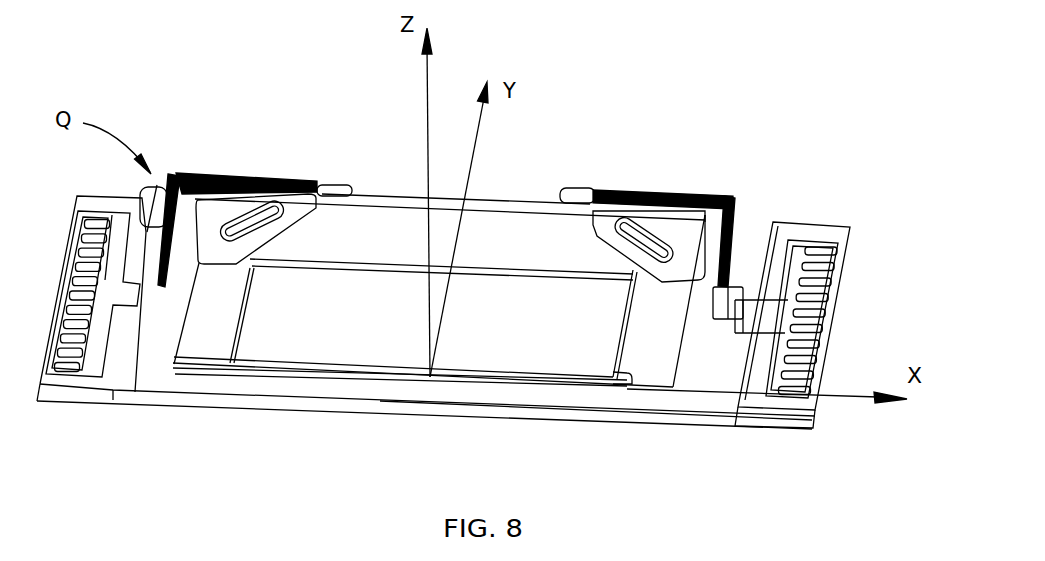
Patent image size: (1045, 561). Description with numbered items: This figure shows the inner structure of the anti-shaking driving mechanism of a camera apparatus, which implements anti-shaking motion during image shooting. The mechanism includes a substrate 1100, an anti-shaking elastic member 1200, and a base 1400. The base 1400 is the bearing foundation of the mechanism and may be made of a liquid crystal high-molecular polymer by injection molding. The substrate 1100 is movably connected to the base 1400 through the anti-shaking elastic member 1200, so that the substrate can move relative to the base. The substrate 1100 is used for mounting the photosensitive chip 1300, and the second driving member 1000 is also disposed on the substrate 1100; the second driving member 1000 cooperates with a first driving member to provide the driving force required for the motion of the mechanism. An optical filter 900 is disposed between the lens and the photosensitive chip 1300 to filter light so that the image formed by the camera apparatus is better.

The optical filter 900 is at (322, 355).
The second driving member 1000 is at (712, 195).
The substrate 1100 is at (635, 383).
The anti-shaking elastic member 1200 is at (735, 210).
The photosensitive chip 1300 is at (400, 375).
The base 1400 is at (793, 230).